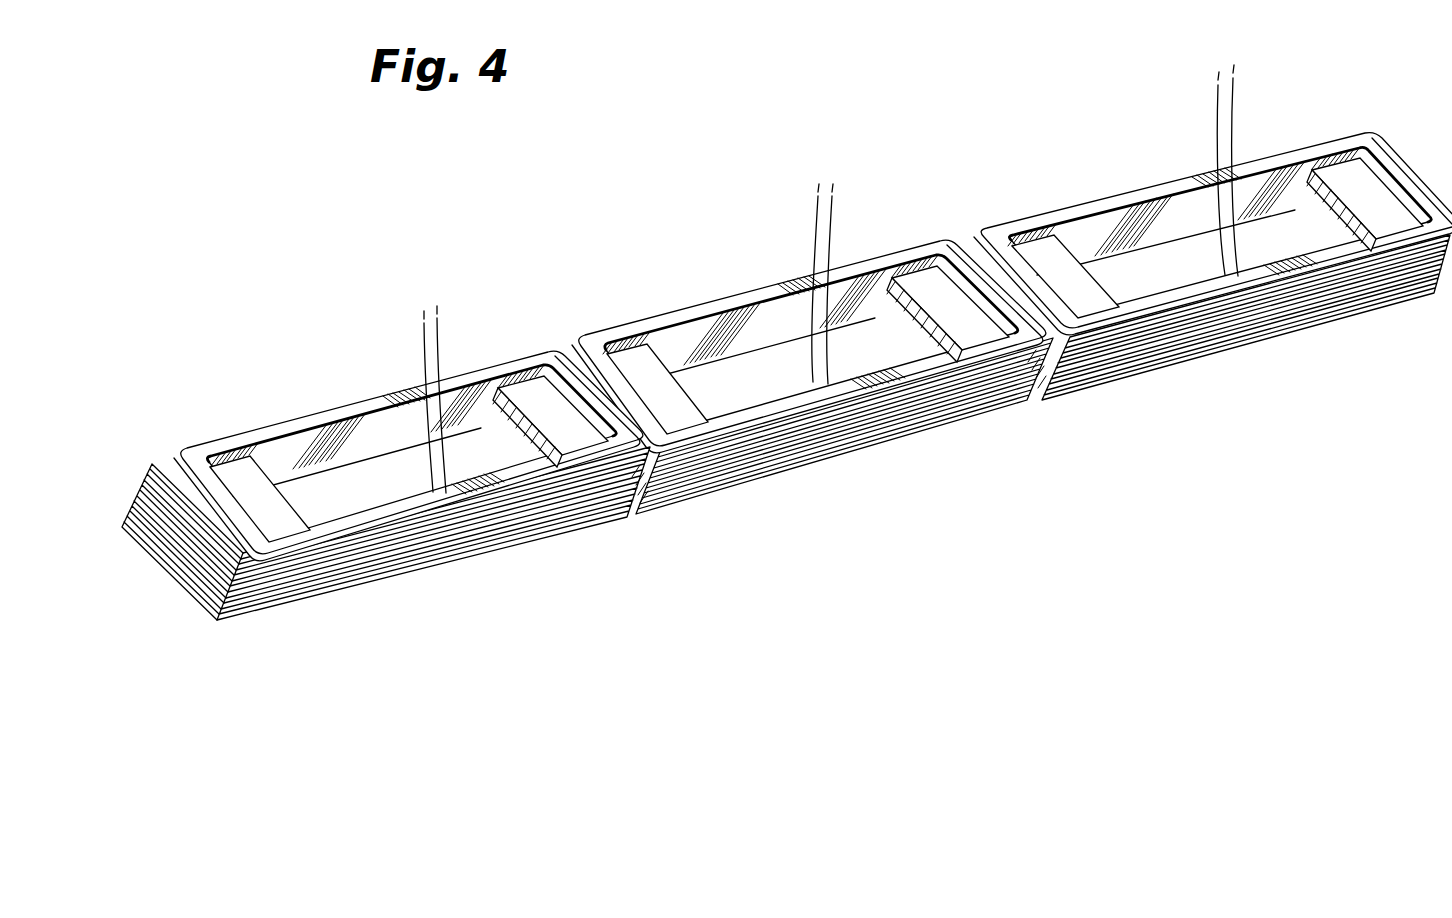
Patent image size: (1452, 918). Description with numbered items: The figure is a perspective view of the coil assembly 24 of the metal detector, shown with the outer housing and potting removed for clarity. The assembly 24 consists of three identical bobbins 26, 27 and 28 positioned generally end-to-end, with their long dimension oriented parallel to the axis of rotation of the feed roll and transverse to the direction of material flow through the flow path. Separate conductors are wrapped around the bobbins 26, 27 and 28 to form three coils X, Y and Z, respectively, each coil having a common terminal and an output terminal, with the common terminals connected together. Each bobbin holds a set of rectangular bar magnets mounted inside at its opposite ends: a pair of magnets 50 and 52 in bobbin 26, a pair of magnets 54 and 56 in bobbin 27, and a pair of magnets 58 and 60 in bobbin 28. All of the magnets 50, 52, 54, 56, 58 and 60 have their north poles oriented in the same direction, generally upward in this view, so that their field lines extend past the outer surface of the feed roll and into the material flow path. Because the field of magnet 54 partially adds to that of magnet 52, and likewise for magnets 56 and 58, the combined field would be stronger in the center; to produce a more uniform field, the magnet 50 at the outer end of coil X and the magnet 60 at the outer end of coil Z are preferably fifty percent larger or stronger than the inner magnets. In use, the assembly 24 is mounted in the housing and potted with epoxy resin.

The assembly 24 is at (787, 342).
The bobbin 26 is at (367, 380).
The bobbin 27 is at (748, 272).
The bobbin 28 is at (1160, 160).
The magnet 50 is at (226, 478).
The magnet 52 is at (535, 395).
The magnet 54 is at (632, 363).
The magnet 56 is at (932, 282).
The magnet 58 is at (1032, 260).
The magnet 60 is at (1344, 181).
The coil X is at (517, 537).
The coil Y is at (868, 447).
The coil Z is at (1205, 352).